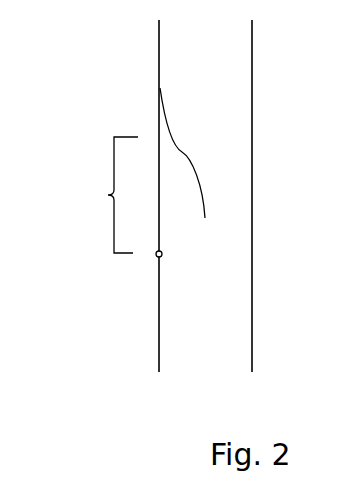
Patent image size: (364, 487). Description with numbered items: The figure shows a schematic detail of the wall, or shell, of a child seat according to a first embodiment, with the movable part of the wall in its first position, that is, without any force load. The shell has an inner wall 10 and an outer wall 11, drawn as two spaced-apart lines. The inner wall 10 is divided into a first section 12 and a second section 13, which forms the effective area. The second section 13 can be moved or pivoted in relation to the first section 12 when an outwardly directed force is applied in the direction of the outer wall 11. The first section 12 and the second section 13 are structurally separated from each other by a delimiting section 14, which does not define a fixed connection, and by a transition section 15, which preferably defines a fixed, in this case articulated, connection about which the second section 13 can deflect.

The inner wall 10 is at (135, 340).
The outer wall 11 is at (264, 341).
The first section 12 is at (160, 293).
The second section 13 is at (108, 195).
The delimiting section 14 is at (153, 133).
The transition section 15 is at (156, 258).